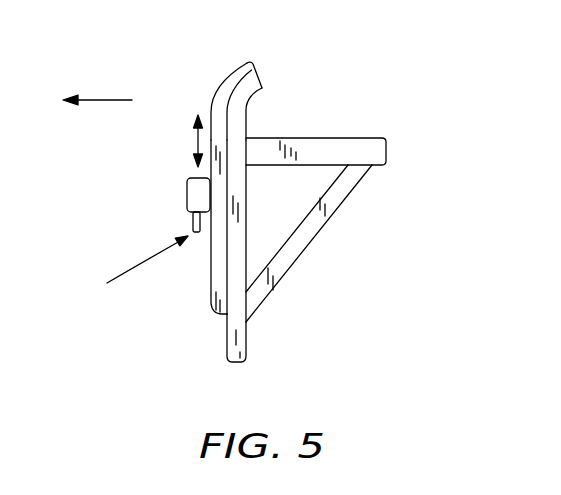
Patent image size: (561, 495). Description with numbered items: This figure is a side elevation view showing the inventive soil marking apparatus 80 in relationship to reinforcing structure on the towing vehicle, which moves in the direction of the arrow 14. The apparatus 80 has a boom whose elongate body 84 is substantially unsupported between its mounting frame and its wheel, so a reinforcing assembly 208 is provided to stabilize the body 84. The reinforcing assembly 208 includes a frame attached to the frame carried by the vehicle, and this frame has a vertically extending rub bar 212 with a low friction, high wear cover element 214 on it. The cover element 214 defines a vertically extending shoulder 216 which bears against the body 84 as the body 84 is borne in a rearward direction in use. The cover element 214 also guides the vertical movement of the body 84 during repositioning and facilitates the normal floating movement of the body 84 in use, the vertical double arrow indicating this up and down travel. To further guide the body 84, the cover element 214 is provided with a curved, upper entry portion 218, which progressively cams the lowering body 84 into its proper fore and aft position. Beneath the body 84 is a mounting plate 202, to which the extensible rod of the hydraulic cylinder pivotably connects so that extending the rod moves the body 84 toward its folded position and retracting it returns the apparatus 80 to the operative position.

The arrow 14 is at (108, 99).
The apparatus for marking soil 80 is at (128, 271).
The elongate body 84 is at (187, 183).
The mounting plate 202 is at (190, 220).
The reinforcing assembly 208 is at (331, 114).
The rub bar 212 is at (238, 250).
The cover element 214 is at (212, 307).
The shoulder 216 is at (211, 278).
The curved upper entry portion 218 is at (245, 70).